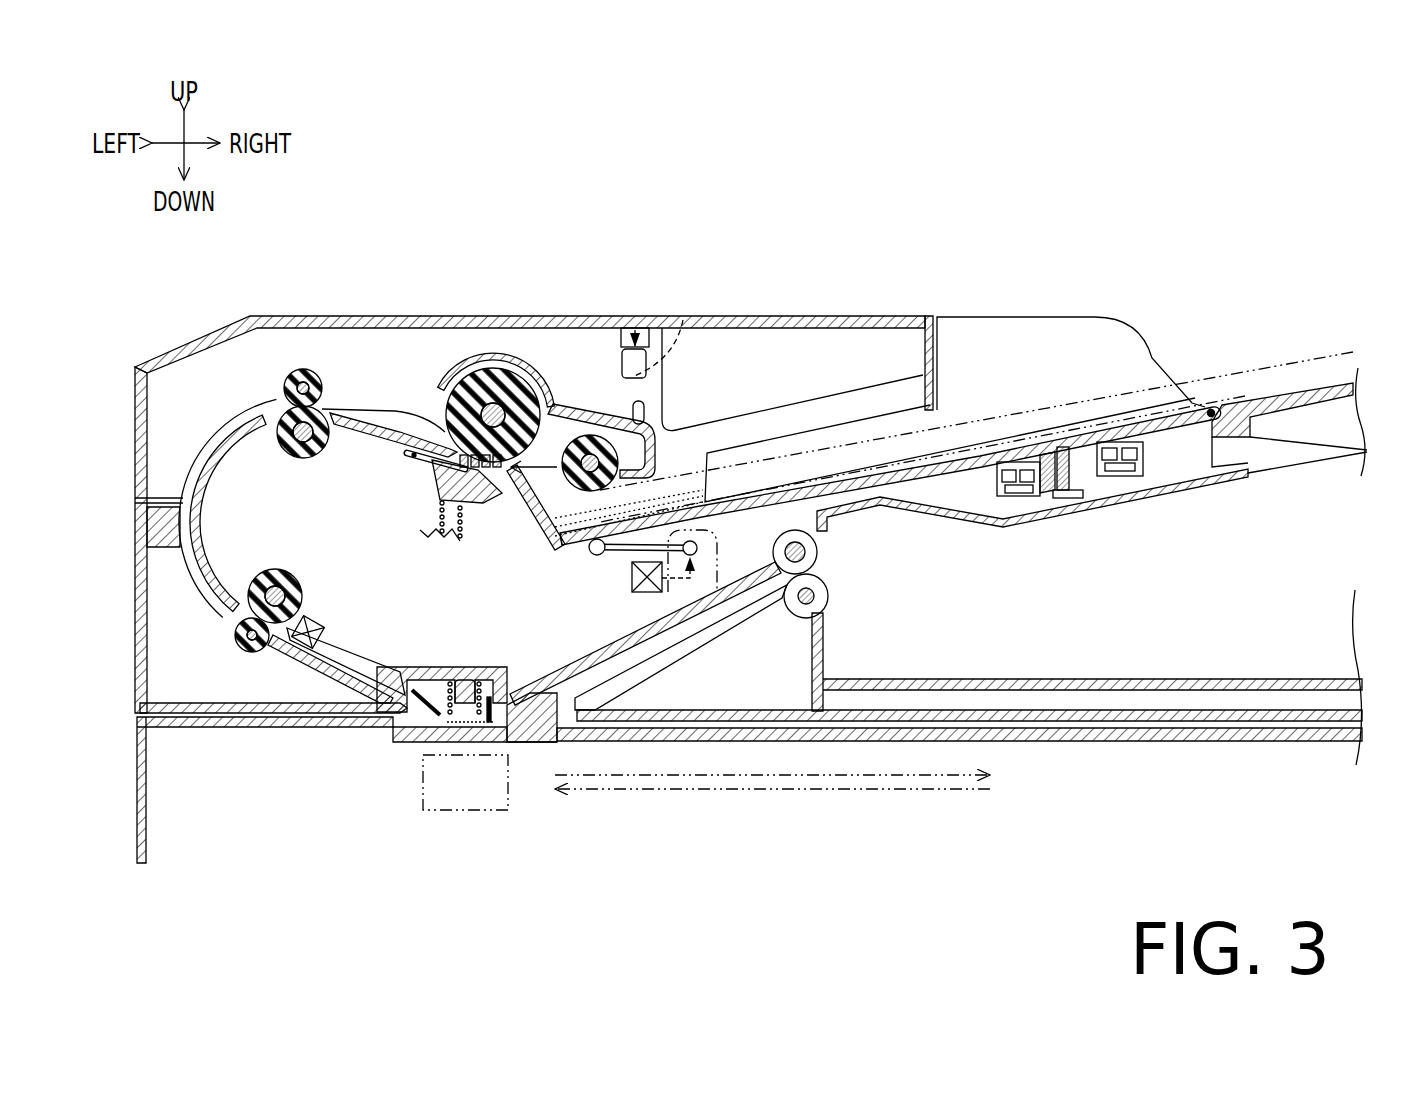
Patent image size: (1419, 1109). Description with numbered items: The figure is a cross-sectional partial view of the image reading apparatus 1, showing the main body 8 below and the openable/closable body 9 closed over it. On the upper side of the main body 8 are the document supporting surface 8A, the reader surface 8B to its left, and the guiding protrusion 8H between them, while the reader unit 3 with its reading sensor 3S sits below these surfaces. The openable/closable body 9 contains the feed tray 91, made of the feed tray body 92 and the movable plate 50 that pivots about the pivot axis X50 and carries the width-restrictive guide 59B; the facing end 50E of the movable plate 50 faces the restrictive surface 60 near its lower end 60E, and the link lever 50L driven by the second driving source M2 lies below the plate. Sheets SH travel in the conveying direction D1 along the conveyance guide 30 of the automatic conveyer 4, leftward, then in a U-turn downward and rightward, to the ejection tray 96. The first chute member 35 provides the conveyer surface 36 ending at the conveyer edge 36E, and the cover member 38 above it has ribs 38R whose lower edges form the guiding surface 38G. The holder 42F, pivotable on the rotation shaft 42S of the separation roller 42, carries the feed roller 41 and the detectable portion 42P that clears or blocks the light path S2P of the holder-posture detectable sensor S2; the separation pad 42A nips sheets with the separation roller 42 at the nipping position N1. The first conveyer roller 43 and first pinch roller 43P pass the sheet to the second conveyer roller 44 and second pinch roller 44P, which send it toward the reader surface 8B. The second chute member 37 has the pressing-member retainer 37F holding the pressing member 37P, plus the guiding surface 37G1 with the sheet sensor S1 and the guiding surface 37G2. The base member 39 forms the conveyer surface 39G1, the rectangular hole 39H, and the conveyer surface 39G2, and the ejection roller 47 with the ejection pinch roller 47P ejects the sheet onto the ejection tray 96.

The image reading apparatus 1 is at (914, 215).
The reader unit 3 is at (781, 842).
The reading sensor 3S is at (497, 795).
The automatic conveyer 4 is at (208, 360).
The main body 8 is at (132, 782).
The document supporting surface 8A is at (1095, 715).
The reader surface 8B is at (453, 745).
The guiding protrusion 8H is at (530, 725).
The openable/closable body 9 is at (131, 368).
The conveyance guide 30 is at (352, 408).
The first chute member 35 is at (362, 443).
The conveyer surface 36 is at (353, 403).
The conveyer edge 36E is at (545, 486).
The second chute member 37 is at (356, 647).
The pressing-member retainer 37F is at (425, 690).
The guiding surface 37G1 is at (325, 675).
The guiding surface 37G2 is at (712, 610).
The pressing member 37P is at (485, 700).
The cover member 38 is at (251, 315).
The guiding surface 38G is at (400, 410).
The ribs 38R is at (290, 345).
The base member 39 is at (1372, 683).
The conveyer surface 39G1 is at (233, 562).
The conveyer surface 39G2 is at (737, 582).
The rectangular hole 39H is at (535, 700).
The feed roller 41 is at (634, 400).
The separation roller 42 is at (500, 366).
The separation pad 42A is at (437, 473).
The holder 42F is at (465, 333).
The detectable portion 42P is at (664, 417).
The rotation shaft 42S is at (535, 345).
The first conveyer roller 43 is at (305, 459).
The first pinch roller 43P is at (316, 370).
The second conveyer roller 44 is at (280, 586).
The second pinch roller 44P is at (236, 647).
The ejection roller 47 is at (818, 553).
The ejection pinch roller 47P is at (829, 596).
The movable plate 50 is at (1168, 440).
The facing end 50E is at (553, 538).
The link lever 50L is at (596, 556).
The width-restrictive guide 59B is at (1033, 340).
The restrictive surface 60 is at (710, 460).
The lower end 60E is at (560, 545).
The feed tray 91 is at (1362, 498).
The feed tray body 92 is at (1298, 416).
The ejection tray 96 is at (1104, 676).
The conveying direction D1 is at (592, 435).
The second driving source M2 is at (647, 590).
The nipping position N1 is at (465, 515).
The sheet sensor S1 is at (317, 617).
The holder-posture detectable sensor S2 is at (632, 327).
The light path S2P is at (683, 320).
The sheets SH is at (1283, 358).
The pivot axis X50 is at (1207, 402).